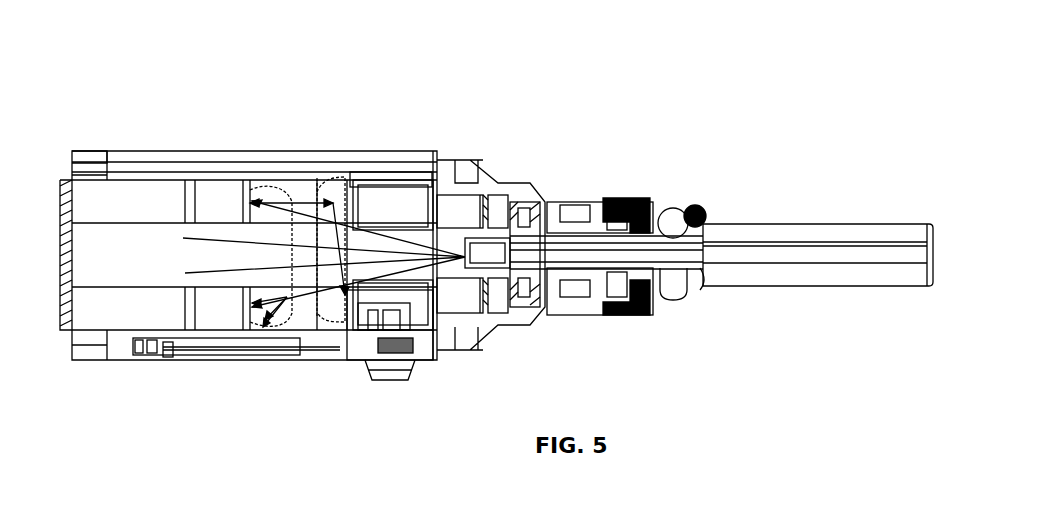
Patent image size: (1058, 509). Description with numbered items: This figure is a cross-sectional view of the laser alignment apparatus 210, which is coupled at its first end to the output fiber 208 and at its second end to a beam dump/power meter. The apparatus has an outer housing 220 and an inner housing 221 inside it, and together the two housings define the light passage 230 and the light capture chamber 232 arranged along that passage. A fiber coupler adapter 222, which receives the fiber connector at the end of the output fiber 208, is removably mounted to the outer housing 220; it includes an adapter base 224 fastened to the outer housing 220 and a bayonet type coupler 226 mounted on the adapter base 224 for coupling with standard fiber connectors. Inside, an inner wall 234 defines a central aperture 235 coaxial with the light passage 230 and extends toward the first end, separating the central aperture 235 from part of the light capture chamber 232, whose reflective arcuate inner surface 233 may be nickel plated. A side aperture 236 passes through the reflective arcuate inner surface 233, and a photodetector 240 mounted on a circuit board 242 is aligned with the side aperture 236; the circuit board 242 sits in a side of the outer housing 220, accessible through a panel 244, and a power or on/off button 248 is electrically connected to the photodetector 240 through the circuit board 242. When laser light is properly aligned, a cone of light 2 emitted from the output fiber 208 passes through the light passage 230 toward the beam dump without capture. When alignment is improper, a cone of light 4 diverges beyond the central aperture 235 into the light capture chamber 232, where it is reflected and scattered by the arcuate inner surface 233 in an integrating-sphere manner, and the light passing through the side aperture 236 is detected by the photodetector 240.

The cone of light 2 is at (185, 273).
The cone of light 4 is at (343, 227).
The output fiber 208 is at (788, 198).
The laser alignment apparatus 210 is at (612, 82).
The outer housing 220 is at (143, 167).
The inner housing 221 is at (240, 190).
The fiber coupler adapter 222 is at (593, 173).
The adapter base 224 is at (500, 183).
The bayonet type coupler 226 is at (643, 198).
The light passage 230 is at (92, 275).
The light capture chamber 232 is at (296, 310).
The reflective arcuate inner surface 233 is at (315, 178).
The inner wall 234 is at (273, 222).
The central aperture 235 is at (305, 178).
The side aperture 236 is at (260, 326).
The photodetector 240 is at (262, 340).
The circuit board 242 is at (197, 350).
The panel 244 is at (182, 360).
The power or on/off button 248 is at (387, 380).